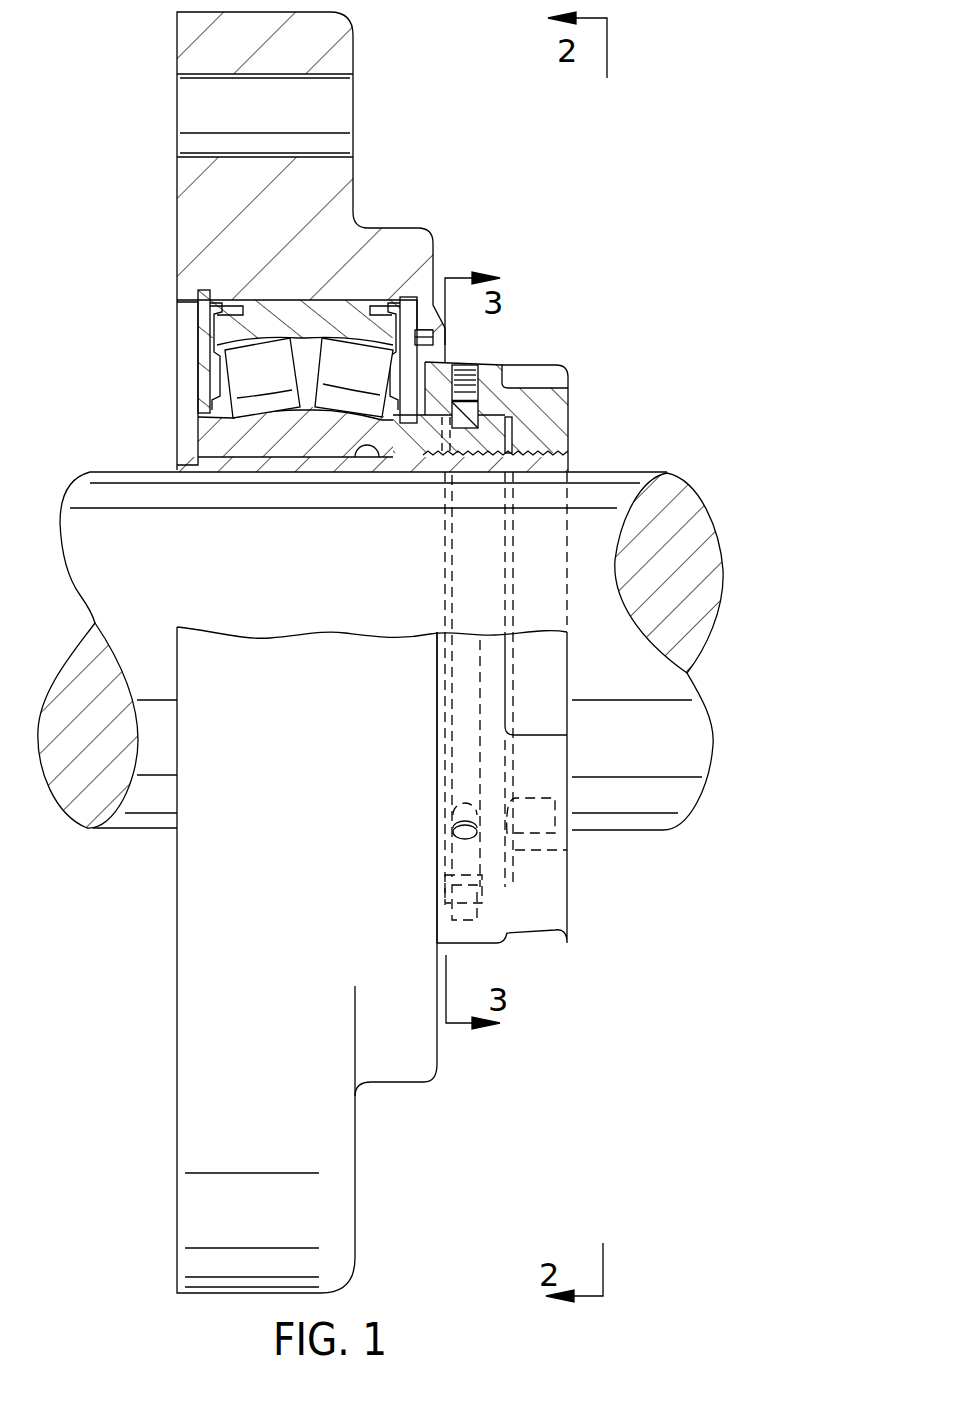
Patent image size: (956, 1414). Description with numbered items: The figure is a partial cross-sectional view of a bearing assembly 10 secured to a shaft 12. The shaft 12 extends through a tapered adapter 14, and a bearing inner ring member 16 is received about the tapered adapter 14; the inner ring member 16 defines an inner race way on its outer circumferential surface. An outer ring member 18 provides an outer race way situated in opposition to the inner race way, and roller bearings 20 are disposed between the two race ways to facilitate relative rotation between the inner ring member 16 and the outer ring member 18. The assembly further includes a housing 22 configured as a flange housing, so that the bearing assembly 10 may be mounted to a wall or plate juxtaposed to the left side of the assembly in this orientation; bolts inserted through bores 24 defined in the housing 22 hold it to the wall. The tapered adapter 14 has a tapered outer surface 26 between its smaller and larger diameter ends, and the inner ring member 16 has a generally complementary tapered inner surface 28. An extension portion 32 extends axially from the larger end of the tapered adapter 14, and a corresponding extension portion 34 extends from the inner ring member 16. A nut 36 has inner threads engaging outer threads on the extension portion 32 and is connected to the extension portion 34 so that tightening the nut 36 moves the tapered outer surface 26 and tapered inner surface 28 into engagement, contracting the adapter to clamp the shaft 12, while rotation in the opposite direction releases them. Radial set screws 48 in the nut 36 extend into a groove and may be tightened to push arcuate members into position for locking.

The bearing assembly 10 is at (532, 236).
The shaft 12 is at (618, 482).
The tapered adapter 14 is at (196, 462).
The bearing inner ring member 16 is at (197, 443).
The outer ring member 18 is at (220, 330).
The roller bearings 20 is at (248, 372).
The housing 22 is at (177, 240).
The bores 24 is at (337, 110).
The tapered outer surface 26 is at (383, 465).
The tapered inner surface 28 is at (266, 462).
The extension portion 32 is at (567, 466).
The extension portion 34 is at (522, 437).
The nut 36 is at (568, 380).
The radial set screws 48 is at (470, 361).